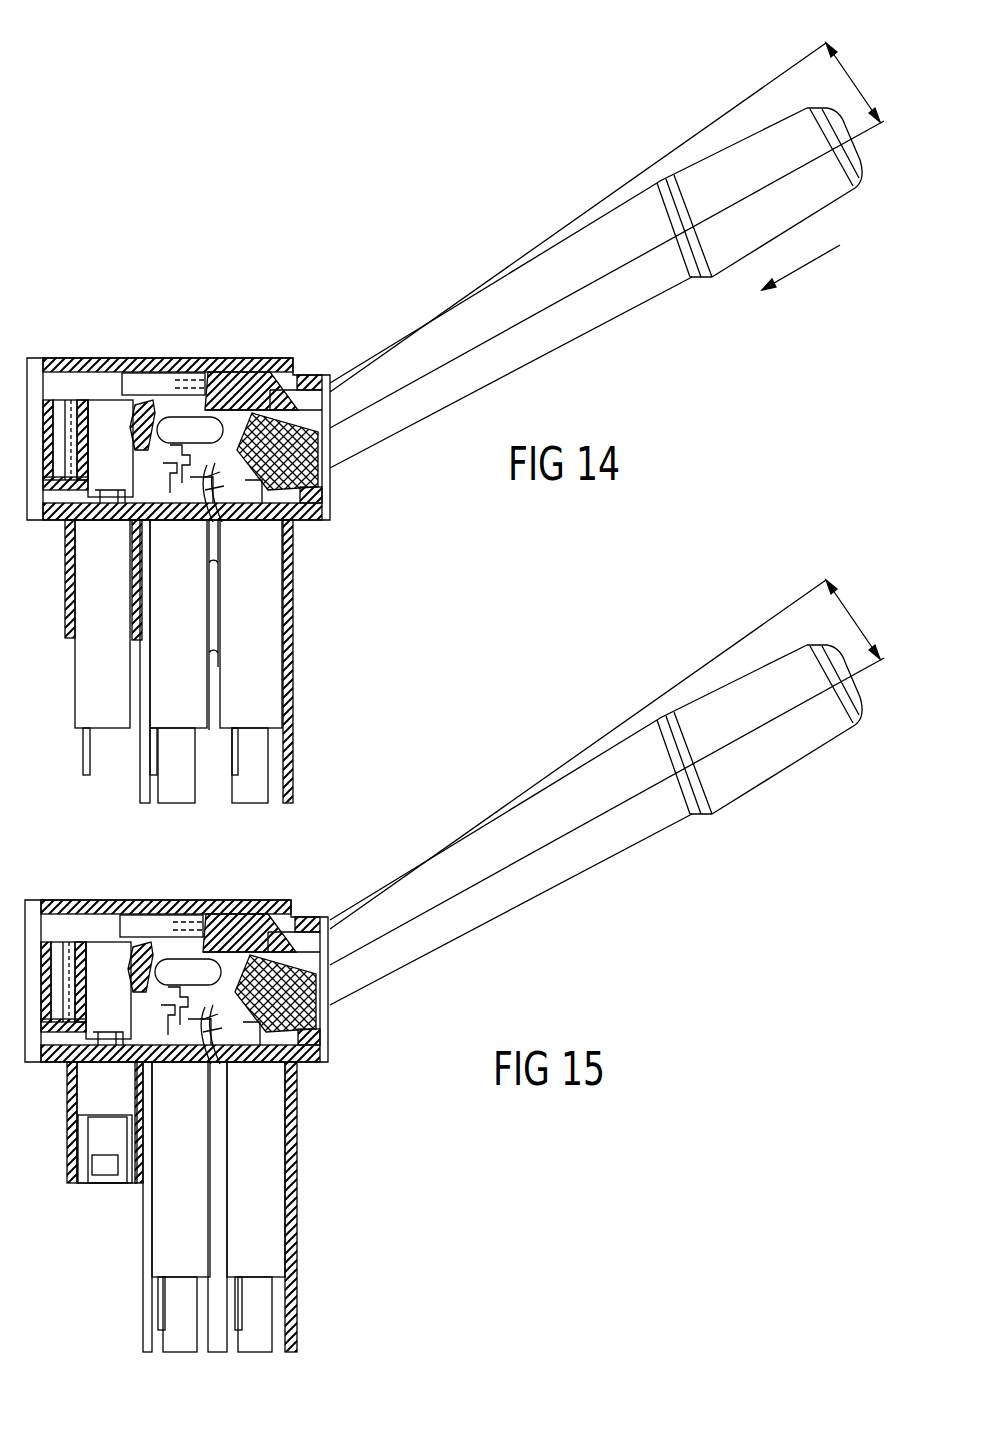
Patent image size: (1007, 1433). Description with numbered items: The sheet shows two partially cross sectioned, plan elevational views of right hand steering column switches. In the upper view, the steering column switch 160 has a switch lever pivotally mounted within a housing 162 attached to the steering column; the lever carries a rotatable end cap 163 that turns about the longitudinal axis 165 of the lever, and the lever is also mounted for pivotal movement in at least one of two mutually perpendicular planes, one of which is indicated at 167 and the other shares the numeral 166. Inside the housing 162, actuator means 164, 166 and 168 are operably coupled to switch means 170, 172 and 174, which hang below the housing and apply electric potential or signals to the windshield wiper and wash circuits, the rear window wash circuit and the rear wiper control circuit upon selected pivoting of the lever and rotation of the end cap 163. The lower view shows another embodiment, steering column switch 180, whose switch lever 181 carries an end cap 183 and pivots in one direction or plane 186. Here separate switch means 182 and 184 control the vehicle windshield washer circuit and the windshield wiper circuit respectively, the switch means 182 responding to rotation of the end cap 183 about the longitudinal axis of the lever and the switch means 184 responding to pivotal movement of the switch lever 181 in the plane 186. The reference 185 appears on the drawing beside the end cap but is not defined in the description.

In FIG. 14, the steering column switch 160 is at (447, 290).
In FIG. 14, the housing 162 is at (138, 362).
In FIG. 14, the end cap 163 is at (720, 256).
In FIG. 14, the actuator means 164 is at (287, 424).
In FIG. 14, the longitudinal axis 165 is at (872, 137).
In FIG. 14, the actuator means 166 is at (208, 428).
In FIG. 14, the plane 167 is at (858, 92).
In FIG. 14, the actuator means 168 is at (126, 410).
In FIG. 14, the switch means 170 is at (265, 577).
In FIG. 14, the switch means 172 is at (187, 703).
In FIG. 14, the switch means 174 is at (110, 713).
In FIG. 15, the steering column switch 180 is at (582, 887).
In FIG. 15, the switch lever 181 is at (401, 958).
In FIG. 15, the switch means 182 is at (268, 1234).
In FIG. 15, the end cap 183 is at (766, 770).
In FIG. 15, the switch means 184 is at (165, 1235).
In FIG. 15, the handle tip 185 is at (873, 669).
In FIG. 15, the plane 186 is at (862, 604).